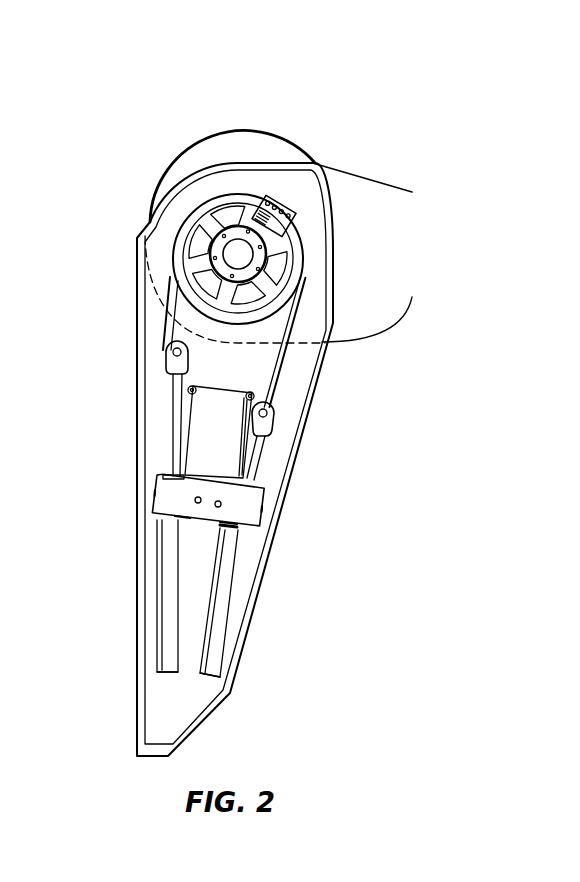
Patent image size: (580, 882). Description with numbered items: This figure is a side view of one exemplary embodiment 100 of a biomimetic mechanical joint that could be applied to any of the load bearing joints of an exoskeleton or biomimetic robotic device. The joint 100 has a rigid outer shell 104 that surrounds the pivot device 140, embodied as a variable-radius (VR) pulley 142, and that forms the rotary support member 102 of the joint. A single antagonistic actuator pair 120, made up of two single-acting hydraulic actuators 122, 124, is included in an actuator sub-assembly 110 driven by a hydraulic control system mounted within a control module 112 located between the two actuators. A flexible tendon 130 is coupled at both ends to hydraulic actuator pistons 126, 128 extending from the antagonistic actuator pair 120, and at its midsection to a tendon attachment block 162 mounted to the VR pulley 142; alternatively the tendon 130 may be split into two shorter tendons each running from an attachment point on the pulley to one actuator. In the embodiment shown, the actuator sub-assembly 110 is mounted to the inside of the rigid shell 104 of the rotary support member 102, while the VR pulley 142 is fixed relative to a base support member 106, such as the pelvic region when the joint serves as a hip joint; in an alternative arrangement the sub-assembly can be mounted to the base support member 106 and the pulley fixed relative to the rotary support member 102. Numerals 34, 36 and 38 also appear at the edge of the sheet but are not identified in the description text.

The biomimetic mechanical joint 100 is at (322, 110).
The rotary support member 102 is at (135, 726).
The rigid outer shell 104 is at (135, 390).
The base support member 106 is at (410, 302).
The actuator sub-assembly 110 is at (106, 532).
The control module 112 is at (267, 523).
The antagonistic actuator pair 120 is at (170, 673).
The single-acting hydraulic actuator 122 is at (233, 625).
The single-acting hydraulic actuator 124 is at (157, 642).
The hydraulic actuator piston 126 is at (262, 457).
The hydraulic actuator piston 128 is at (167, 418).
The flexible tendon 130 is at (287, 367).
The pivot device 140 is at (178, 169).
The variable-radius pulley 142 is at (297, 250).
The tendon attachment block 162 is at (257, 195).
The component 34 is at (0, 163).
The component 36 is at (0, 150).
The component 38 is at (6, 246).